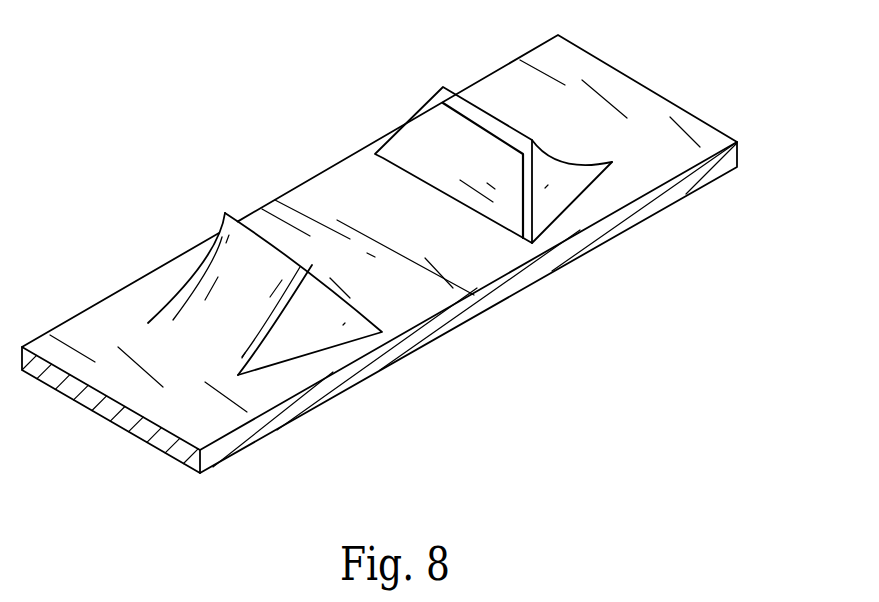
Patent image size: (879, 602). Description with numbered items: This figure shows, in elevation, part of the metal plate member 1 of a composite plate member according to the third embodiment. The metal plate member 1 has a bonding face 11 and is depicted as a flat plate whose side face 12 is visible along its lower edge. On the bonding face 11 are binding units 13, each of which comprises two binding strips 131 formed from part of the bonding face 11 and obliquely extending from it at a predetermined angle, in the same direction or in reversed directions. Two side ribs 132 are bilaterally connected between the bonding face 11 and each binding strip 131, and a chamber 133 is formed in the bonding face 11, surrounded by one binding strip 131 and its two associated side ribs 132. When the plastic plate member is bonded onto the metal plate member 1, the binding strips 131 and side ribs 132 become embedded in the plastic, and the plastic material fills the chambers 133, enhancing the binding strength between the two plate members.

The metal plate member 1 is at (238, 182).
The bonding face 11 is at (319, 173).
The side face 12 is at (470, 320).
The binding unit 13 is at (202, 222).
The binding strip 131 is at (523, 110).
The side rib 132 is at (342, 325).
The chamber 133 is at (447, 151).